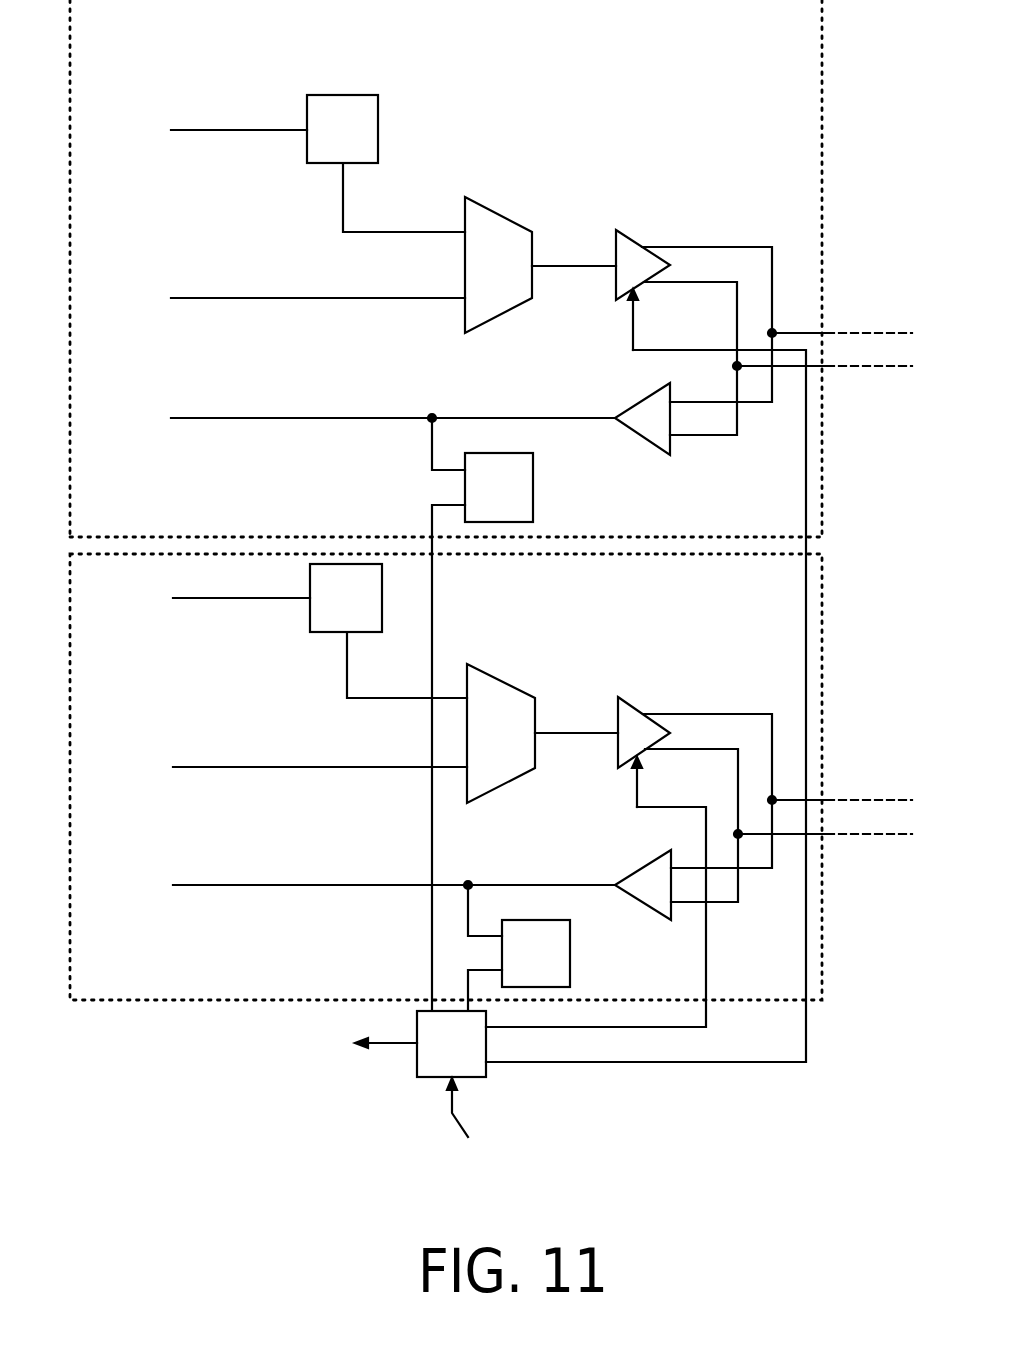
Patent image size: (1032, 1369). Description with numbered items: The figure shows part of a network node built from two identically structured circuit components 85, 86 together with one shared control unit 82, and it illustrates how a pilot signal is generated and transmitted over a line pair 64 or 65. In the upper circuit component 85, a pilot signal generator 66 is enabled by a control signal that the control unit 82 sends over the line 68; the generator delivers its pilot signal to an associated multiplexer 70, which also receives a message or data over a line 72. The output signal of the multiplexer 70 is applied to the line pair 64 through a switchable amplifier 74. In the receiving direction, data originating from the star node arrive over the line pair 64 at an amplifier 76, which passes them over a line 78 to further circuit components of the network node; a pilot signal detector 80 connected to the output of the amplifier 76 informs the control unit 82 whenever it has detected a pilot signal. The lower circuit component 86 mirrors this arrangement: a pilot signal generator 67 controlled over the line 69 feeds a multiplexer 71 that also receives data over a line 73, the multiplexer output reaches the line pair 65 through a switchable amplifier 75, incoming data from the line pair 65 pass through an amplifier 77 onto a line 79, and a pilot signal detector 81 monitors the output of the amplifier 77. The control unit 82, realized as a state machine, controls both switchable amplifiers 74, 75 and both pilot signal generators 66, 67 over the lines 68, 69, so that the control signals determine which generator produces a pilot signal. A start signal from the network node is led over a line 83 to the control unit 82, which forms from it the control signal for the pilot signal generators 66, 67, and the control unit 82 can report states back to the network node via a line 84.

The line pair 64 is at (884, 305).
The line pair 65 is at (869, 772).
The pilot signal generator 66 is at (362, 108).
The pilot signal generator 67 is at (328, 621).
The line 68 is at (197, 130).
The line 69 is at (199, 598).
The multiplexer 70 is at (497, 237).
The multiplexer 71 is at (500, 705).
The line 72 is at (196, 298).
The line 73 is at (197, 767).
The switchable amplifier 74 is at (620, 290).
The switchable amplifier 75 is at (622, 755).
The amplifier 76 is at (638, 417).
The amplifier 77 is at (655, 887).
The line 78 is at (264, 418).
The line 79 is at (268, 886).
The pilot signal detector 80 is at (527, 480).
The pilot signal detector 81 is at (533, 938).
The control unit 82 is at (430, 1067).
The line 83 is at (478, 1123).
The line 84 is at (383, 1047).
The first circuit component 85 is at (805, 145).
The second circuit component 86 is at (125, 978).